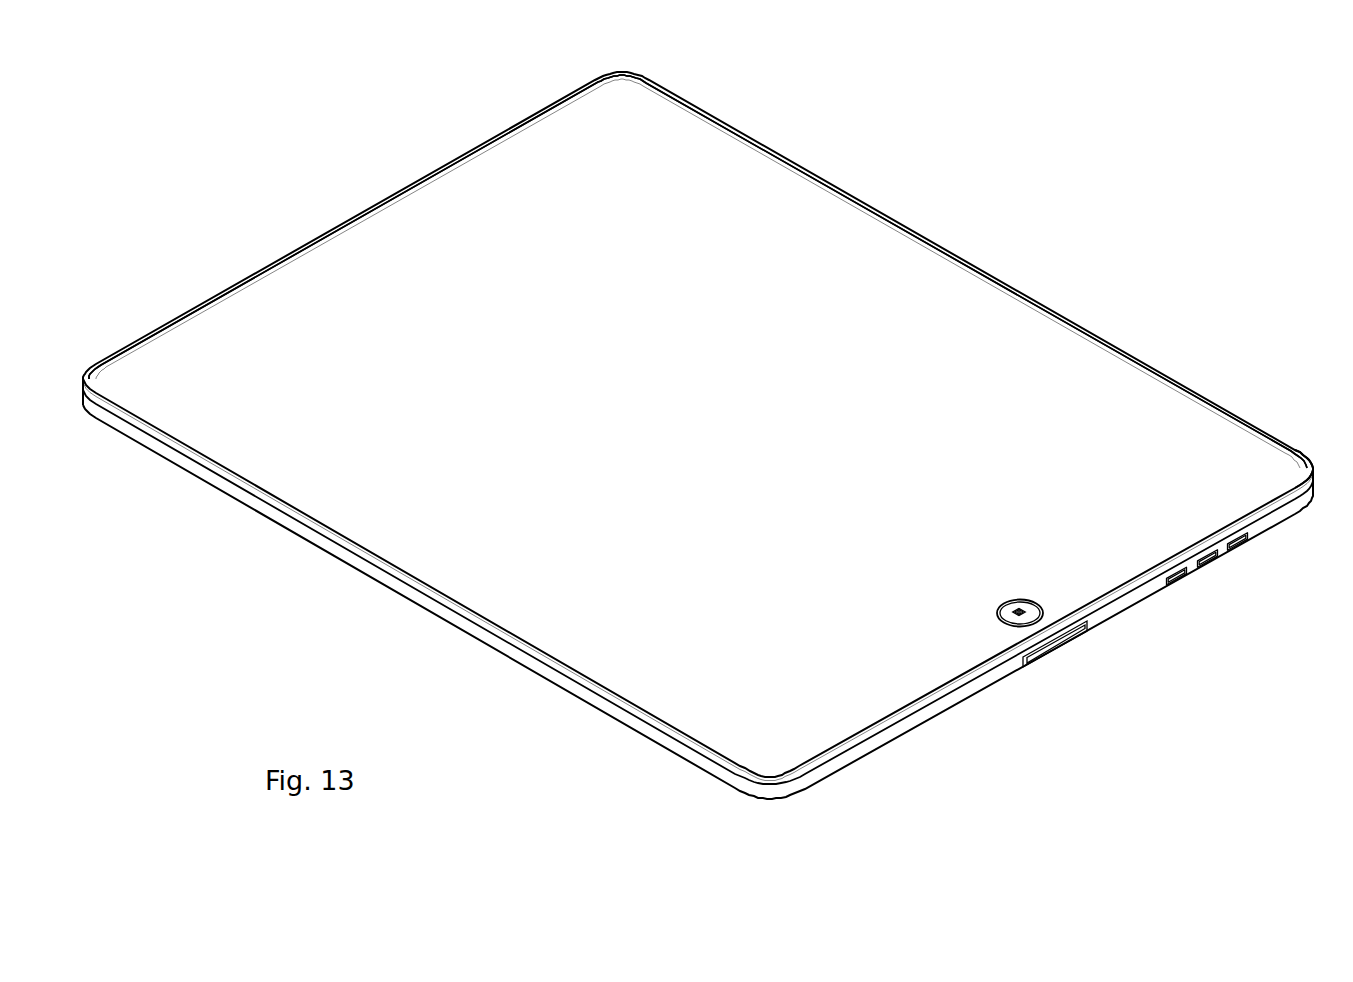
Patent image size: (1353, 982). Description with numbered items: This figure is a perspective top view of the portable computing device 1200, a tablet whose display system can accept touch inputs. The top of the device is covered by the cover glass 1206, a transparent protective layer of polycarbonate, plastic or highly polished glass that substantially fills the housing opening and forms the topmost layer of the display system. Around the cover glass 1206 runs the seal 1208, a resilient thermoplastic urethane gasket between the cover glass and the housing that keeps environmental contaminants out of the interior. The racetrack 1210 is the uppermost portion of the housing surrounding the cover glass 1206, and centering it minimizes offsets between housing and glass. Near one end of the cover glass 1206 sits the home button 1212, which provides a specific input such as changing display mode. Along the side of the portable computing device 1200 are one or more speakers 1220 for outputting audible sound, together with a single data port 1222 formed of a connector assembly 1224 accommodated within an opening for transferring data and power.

The portable computing device 1200 is at (1038, 221).
The cover glass 1206 is at (652, 332).
The seal 1208 is at (1277, 447).
The racetrack 1210 is at (917, 231).
The home button 1212 is at (1003, 596).
The speakers 1220 is at (1219, 587).
The data port 1222 is at (1064, 658).
The connector assembly 1224 is at (1046, 660).